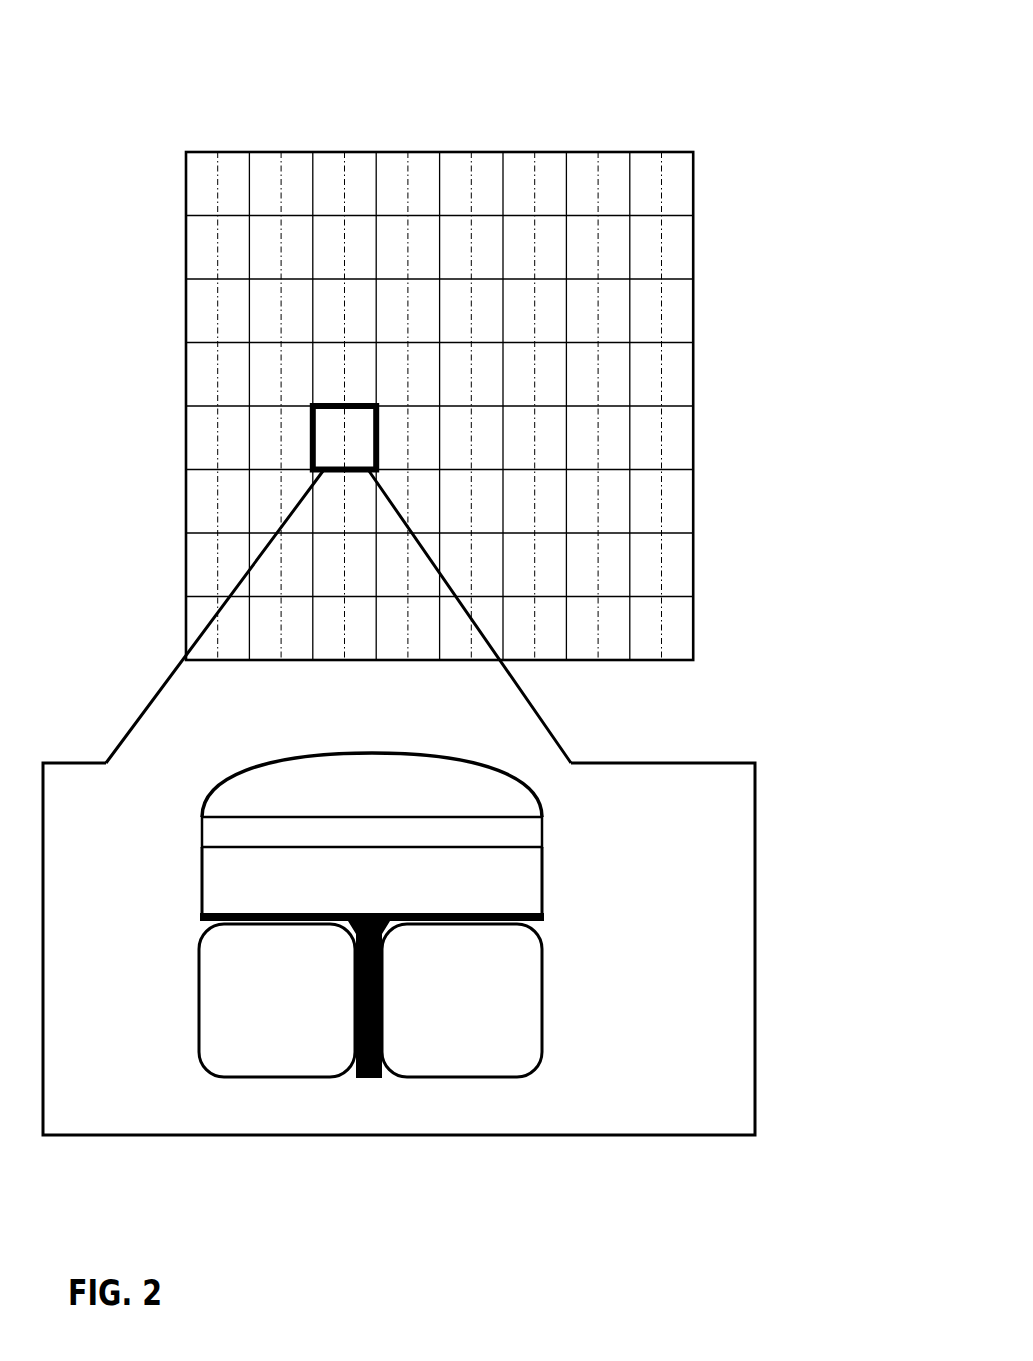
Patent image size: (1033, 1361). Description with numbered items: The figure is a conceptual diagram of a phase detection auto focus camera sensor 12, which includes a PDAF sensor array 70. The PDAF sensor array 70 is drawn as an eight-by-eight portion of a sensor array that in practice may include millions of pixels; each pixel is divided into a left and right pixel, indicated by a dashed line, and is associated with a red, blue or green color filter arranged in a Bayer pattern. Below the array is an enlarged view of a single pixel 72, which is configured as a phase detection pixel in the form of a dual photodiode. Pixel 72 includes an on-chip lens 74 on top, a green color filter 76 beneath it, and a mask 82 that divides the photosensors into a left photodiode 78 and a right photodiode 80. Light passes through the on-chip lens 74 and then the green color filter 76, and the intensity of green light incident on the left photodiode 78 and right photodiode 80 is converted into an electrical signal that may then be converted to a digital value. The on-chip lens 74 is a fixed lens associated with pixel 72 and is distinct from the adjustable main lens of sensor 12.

The sensor 12 is at (658, 52).
The PDAF sensor array 70 is at (651, 152).
The pixel 72 is at (644, 862).
The on-chip lens 74 is at (450, 757).
The green color filter 76 is at (202, 832).
The left photodiode 78 is at (199, 998).
The right photodiode 80 is at (542, 1000).
The mask 82 is at (540, 912).